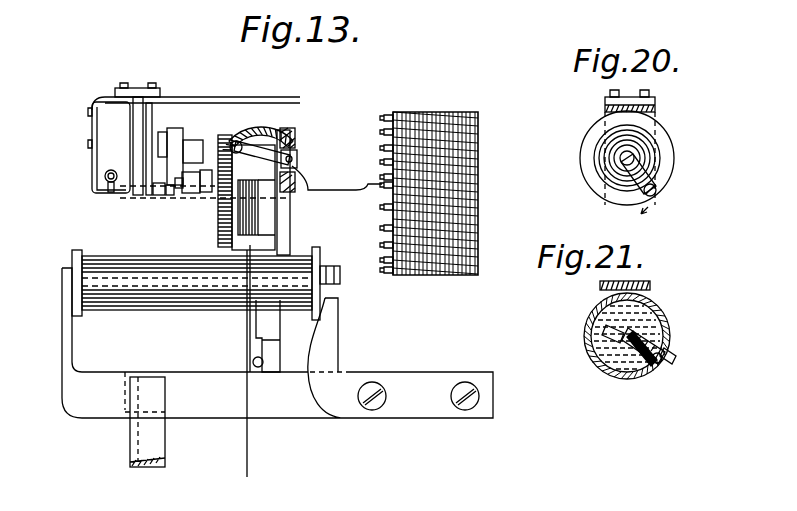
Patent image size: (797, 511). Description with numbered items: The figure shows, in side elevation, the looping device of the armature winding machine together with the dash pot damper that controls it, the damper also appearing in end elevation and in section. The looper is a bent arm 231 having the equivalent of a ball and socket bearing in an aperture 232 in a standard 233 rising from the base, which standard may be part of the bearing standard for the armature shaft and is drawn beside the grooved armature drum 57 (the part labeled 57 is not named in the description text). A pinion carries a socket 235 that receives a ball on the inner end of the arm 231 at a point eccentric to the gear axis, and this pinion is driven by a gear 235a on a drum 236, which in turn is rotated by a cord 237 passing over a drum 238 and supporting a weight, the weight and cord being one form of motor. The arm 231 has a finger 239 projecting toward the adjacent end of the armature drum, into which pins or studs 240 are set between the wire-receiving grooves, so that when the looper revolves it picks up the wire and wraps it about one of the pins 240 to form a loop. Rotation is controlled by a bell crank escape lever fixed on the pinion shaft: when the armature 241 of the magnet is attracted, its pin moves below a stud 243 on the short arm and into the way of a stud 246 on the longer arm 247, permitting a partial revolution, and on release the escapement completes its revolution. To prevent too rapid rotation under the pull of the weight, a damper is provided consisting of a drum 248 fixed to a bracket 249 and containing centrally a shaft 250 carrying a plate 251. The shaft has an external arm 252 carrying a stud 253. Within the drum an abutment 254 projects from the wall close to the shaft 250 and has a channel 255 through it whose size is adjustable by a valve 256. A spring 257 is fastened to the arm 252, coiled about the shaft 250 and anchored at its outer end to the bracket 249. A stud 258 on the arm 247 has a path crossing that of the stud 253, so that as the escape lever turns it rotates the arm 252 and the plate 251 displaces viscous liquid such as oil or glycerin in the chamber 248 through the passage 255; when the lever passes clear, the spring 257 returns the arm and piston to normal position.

In FIG. 13, the commutator grid 57 is at (468, 210).
In FIG. 13, the bent arm 231 is at (322, 189).
In FIG. 13, the aperture 232 is at (286, 141).
In FIG. 13, the standard 233 is at (278, 232).
In FIG. 13, the socket 235 is at (230, 135).
In FIG. 13, the gear 235a is at (217, 232).
In FIG. 13, the drum 236 is at (262, 207).
In FIG. 13, the cord 237 is at (180, 306).
In FIG. 13, the drum 238 is at (252, 250).
In FIG. 13, the finger 239 is at (382, 177).
In FIG. 13, the pins or studs 240 is at (382, 132).
In FIG. 13, the armature 241 is at (203, 192).
In FIG. 13, the stud 243 is at (193, 192).
In FIG. 13, the stud 246 is at (188, 130).
In FIG. 13, the longer arm 247 is at (177, 192).
In FIG. 13, the drum 248 is at (110, 128).
In FIG. 21, the drum 248 is at (652, 305).
In FIG. 13, the bracket 249 is at (170, 97).
In FIG. 20, the bracket 249 is at (656, 103).
In FIG. 21, the bracket 249 is at (650, 285).
In FIG. 20, the shaft 250 is at (635, 164).
In FIG. 21, the shaft 250 is at (602, 328).
In FIG. 21, the plate 251 is at (626, 378).
In FIG. 13, the external arm 252 is at (152, 190).
In FIG. 13, the stud 253 is at (165, 192).
In FIG. 13, the abutment 254 is at (217, 140).
In FIG. 21, the abutment 254 is at (668, 318).
In FIG. 21, the channel 255 is at (668, 335).
In FIG. 13, the valve 256 is at (105, 182).
In FIG. 21, the valve 256 is at (660, 362).
In FIG. 13, the spring 257 is at (138, 117).
In FIG. 20, the spring 257 is at (586, 133).
In FIG. 13, the stud 258 is at (163, 130).